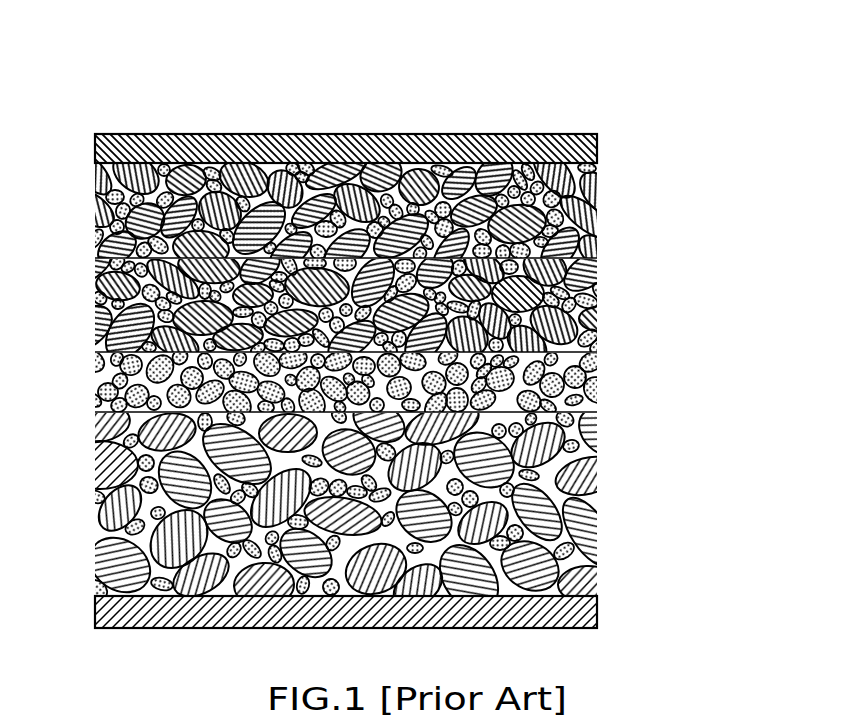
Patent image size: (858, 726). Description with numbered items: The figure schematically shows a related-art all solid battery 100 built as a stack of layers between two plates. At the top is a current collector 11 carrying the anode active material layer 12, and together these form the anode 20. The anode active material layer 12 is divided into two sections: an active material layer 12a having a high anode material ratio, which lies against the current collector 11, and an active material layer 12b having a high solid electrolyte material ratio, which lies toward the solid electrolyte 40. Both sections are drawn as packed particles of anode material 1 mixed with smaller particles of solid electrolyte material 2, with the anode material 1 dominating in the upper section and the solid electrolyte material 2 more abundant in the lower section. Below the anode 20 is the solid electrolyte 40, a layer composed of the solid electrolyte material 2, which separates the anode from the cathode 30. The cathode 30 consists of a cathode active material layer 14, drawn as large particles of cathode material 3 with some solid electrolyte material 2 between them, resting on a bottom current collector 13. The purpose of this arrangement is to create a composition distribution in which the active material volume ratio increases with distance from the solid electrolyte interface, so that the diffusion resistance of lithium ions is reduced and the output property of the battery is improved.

The all solid battery 100 is at (521, 109).
The anode 20 is at (797, 135).
The current collector 11 is at (634, 134).
The anode active material layer 12 is at (714, 165).
The active material layer having high anode material ratio 12a is at (634, 165).
The active material layer having high solid electrolyte material ratio 12b is at (634, 258).
The solid electrolyte 40 is at (634, 352).
The cathode 30 is at (714, 412).
The cathode active material layer 14 is at (634, 412).
The current collector 13 is at (634, 596).
The anode material 1 is at (105, 287).
The solid electrolyte material 2 is at (99, 390).
The cathode material 3 is at (107, 514).